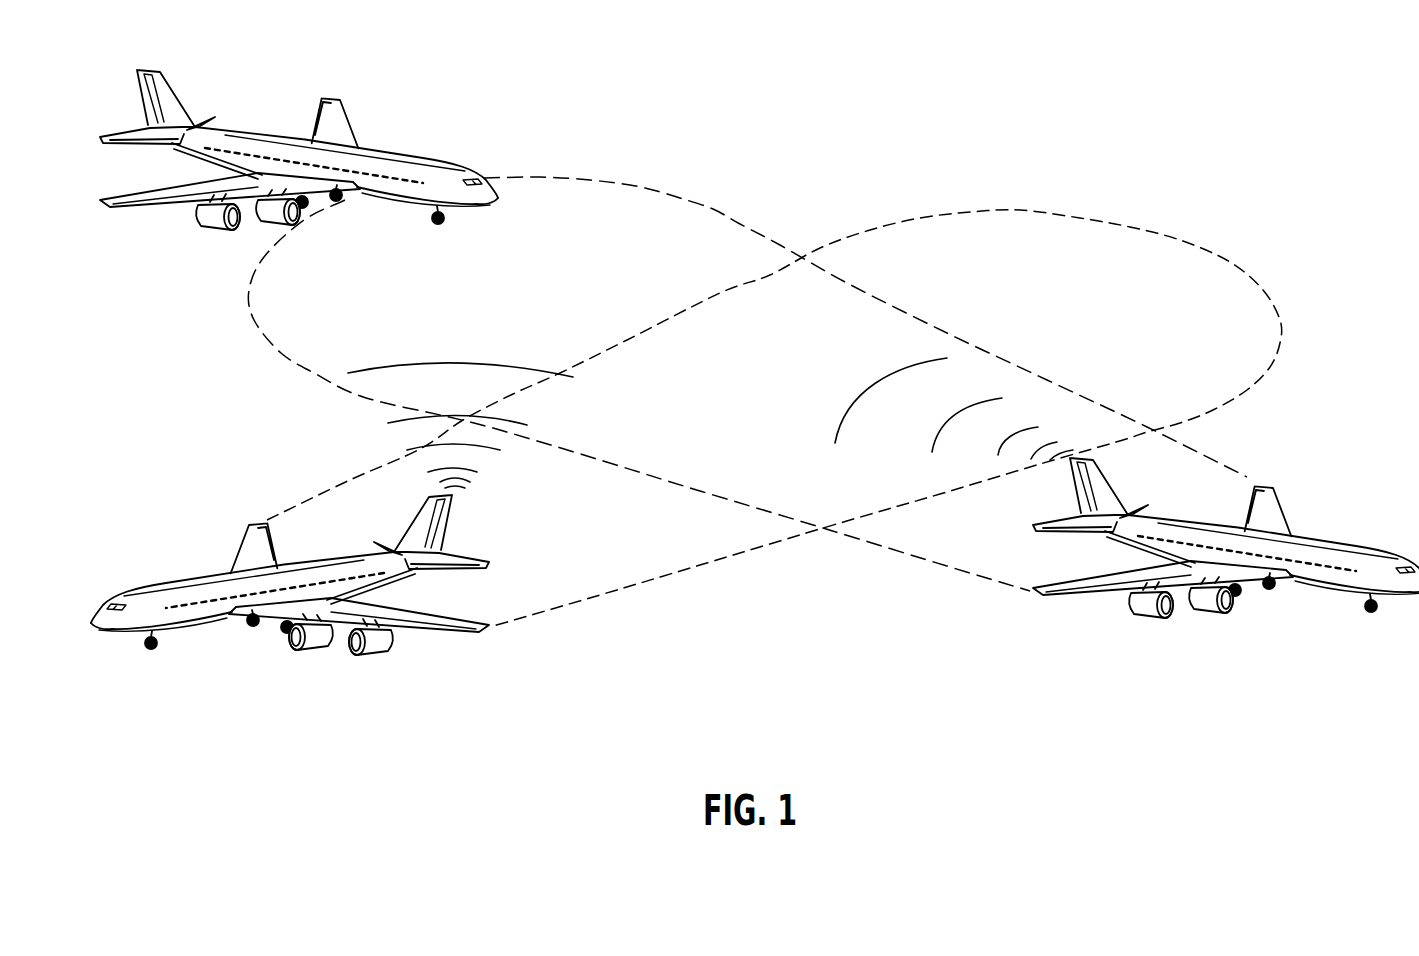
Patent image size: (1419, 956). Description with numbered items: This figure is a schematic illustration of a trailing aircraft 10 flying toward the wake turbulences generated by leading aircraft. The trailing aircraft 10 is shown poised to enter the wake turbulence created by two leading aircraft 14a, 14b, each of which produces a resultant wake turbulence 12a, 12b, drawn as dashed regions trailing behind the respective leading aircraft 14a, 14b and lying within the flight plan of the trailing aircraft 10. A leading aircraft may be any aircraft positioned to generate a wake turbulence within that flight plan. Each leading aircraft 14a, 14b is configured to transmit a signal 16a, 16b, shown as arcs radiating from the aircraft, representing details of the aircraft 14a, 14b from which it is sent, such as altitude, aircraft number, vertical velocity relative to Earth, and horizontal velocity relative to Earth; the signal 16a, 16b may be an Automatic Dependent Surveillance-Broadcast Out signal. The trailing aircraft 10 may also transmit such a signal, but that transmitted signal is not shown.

The trailing aircraft 10 is at (417, 146).
The wake turbulence 12a is at (652, 189).
The wake turbulence 12b is at (1033, 211).
The leading aircraft 14a is at (1337, 536).
The leading aircraft 14b is at (156, 586).
The signal 16a is at (887, 377).
The signal 16b is at (466, 363).